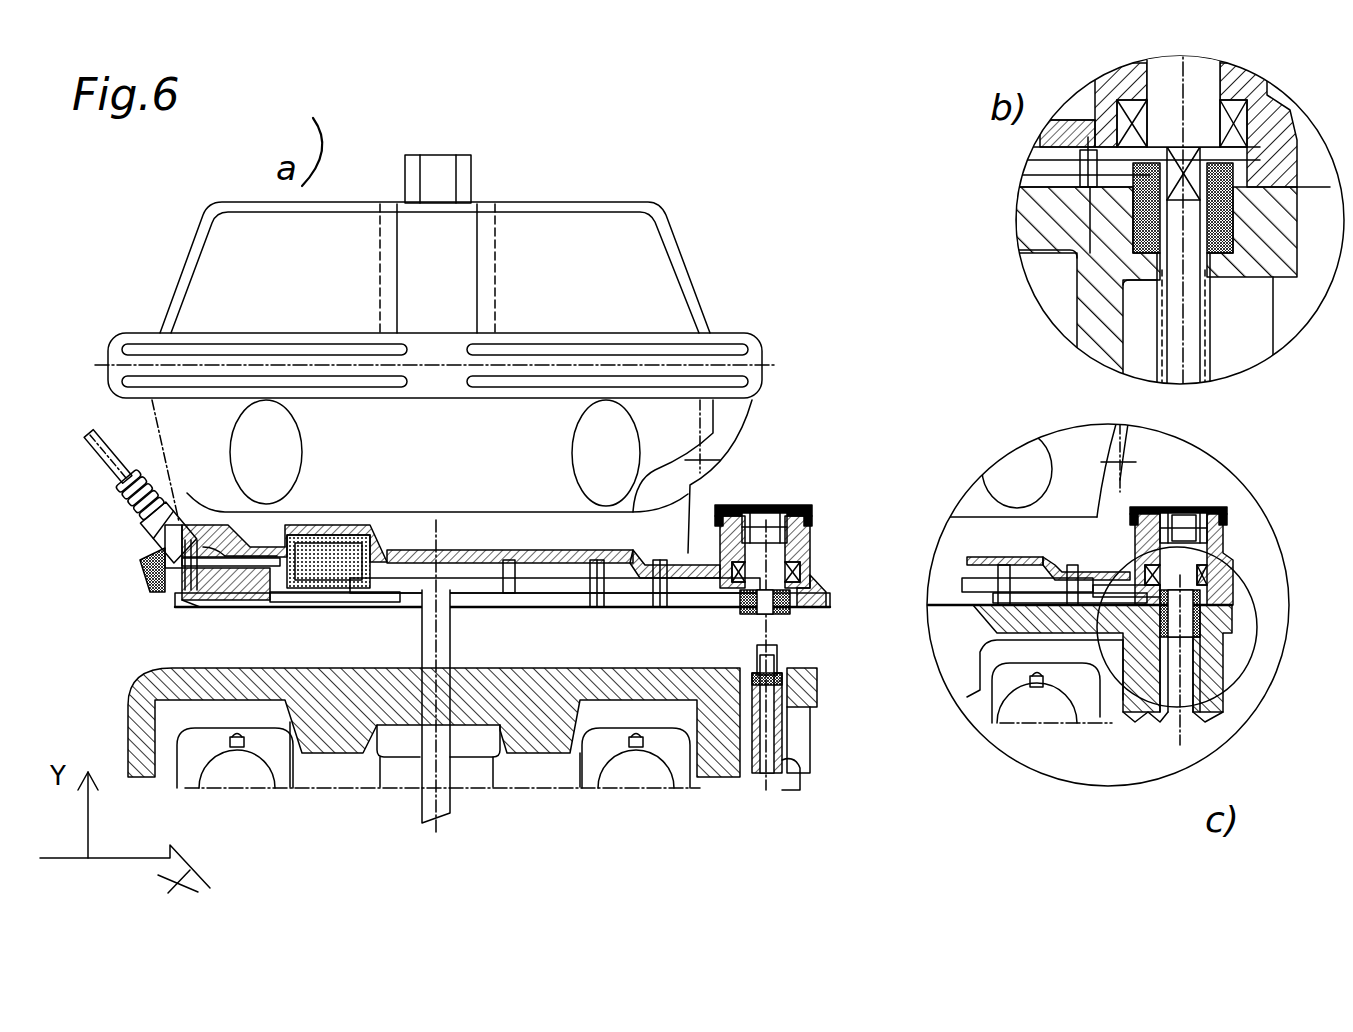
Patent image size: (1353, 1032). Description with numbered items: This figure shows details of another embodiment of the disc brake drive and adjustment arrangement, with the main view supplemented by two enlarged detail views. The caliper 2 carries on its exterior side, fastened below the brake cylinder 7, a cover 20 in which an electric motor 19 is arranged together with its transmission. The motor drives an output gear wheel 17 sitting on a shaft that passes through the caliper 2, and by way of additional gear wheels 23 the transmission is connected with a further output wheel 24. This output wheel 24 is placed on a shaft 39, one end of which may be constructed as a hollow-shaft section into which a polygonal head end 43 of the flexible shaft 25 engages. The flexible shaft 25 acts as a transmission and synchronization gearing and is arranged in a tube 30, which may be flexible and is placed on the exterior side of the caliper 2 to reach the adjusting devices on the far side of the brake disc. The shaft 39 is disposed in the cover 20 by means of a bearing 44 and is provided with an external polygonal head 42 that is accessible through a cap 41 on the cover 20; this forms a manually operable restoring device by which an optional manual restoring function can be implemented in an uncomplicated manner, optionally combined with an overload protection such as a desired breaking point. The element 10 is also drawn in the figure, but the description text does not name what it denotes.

In FIG. 6a, the caliper 2 is at (510, 690).
In FIG. 6a, the brake cylinder 7 is at (735, 350).
In FIG. 6a, the shaft 10 is at (424, 637).
In FIG. 6a, the output gear wheel 17 is at (458, 588).
In FIG. 6a, the electric motor 19 is at (340, 540).
In FIG. 6a, the cover 20 is at (625, 550).
In FIG. 6a, the additional gear wheels 23 is at (548, 553).
In FIG. 6a, the output wheel 24 is at (813, 600).
In FIG. 6a, the flexible shaft 25 is at (764, 765).
In FIG. 6a, the tube 30 is at (773, 773).
In FIG. 6a, the shaft 39 is at (770, 555).
In FIG. 6b, the shaft 39 is at (1203, 84).
In FIG. 6c, the shaft 39 is at (1179, 565).
In FIG. 6c, the cap 41 is at (1187, 532).
In FIG. 6a, the external polygonal head 42 is at (767, 508).
In FIG. 6c, the external polygonal head 42 is at (1227, 536).
In FIG. 6a, the polygonal head end 43 is at (778, 650).
In FIG. 6a, the bearing 44 is at (813, 570).
In FIG. 6b, the bearing 44 is at (1225, 118).